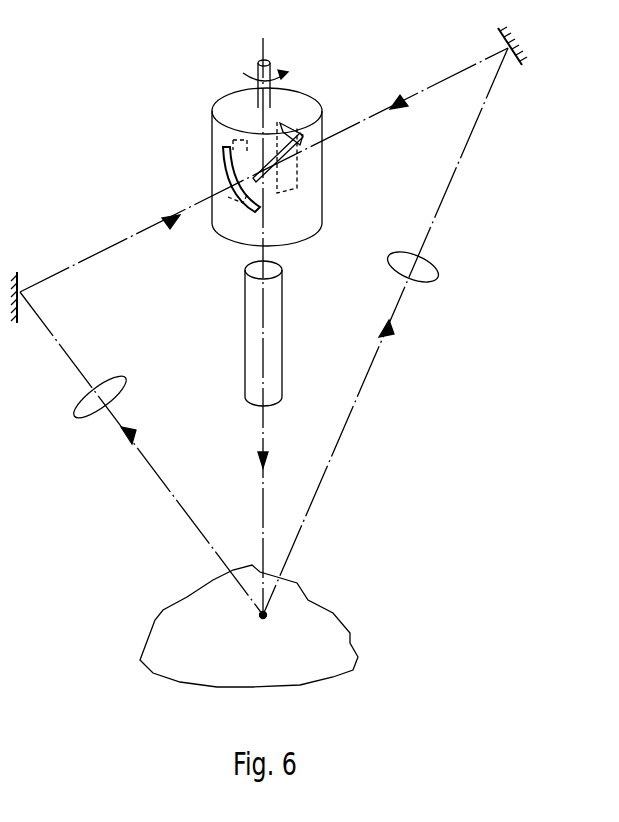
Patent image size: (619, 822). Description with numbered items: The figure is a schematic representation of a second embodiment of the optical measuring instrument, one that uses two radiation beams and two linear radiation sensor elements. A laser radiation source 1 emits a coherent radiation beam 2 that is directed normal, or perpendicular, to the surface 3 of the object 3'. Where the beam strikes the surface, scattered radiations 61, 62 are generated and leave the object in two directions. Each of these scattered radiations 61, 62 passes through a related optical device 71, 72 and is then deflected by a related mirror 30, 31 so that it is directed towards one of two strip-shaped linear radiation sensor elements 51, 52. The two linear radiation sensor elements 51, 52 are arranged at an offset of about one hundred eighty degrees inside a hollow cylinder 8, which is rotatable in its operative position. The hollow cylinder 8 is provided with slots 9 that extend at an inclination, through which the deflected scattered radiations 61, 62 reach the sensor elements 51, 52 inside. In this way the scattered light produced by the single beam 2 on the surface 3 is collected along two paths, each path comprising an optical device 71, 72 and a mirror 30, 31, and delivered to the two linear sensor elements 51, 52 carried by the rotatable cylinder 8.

The laser radiation source 1 is at (272, 365).
The coherent radiation beam 2 is at (260, 487).
The surface 3 is at (249, 608).
The object 3' is at (320, 590).
The hollow cylinder 8 is at (322, 108).
The slots 9 is at (212, 145).
The mirror 30 is at (20, 282).
The mirror 31 is at (514, 68).
The linear radiation sensor element 51 is at (243, 152).
The linear radiation sensor element 52 is at (282, 127).
The scattered radiation 61 is at (148, 468).
The scattered radiation 62 is at (347, 420).
The optical device 71 is at (78, 407).
The optical device 72 is at (430, 277).